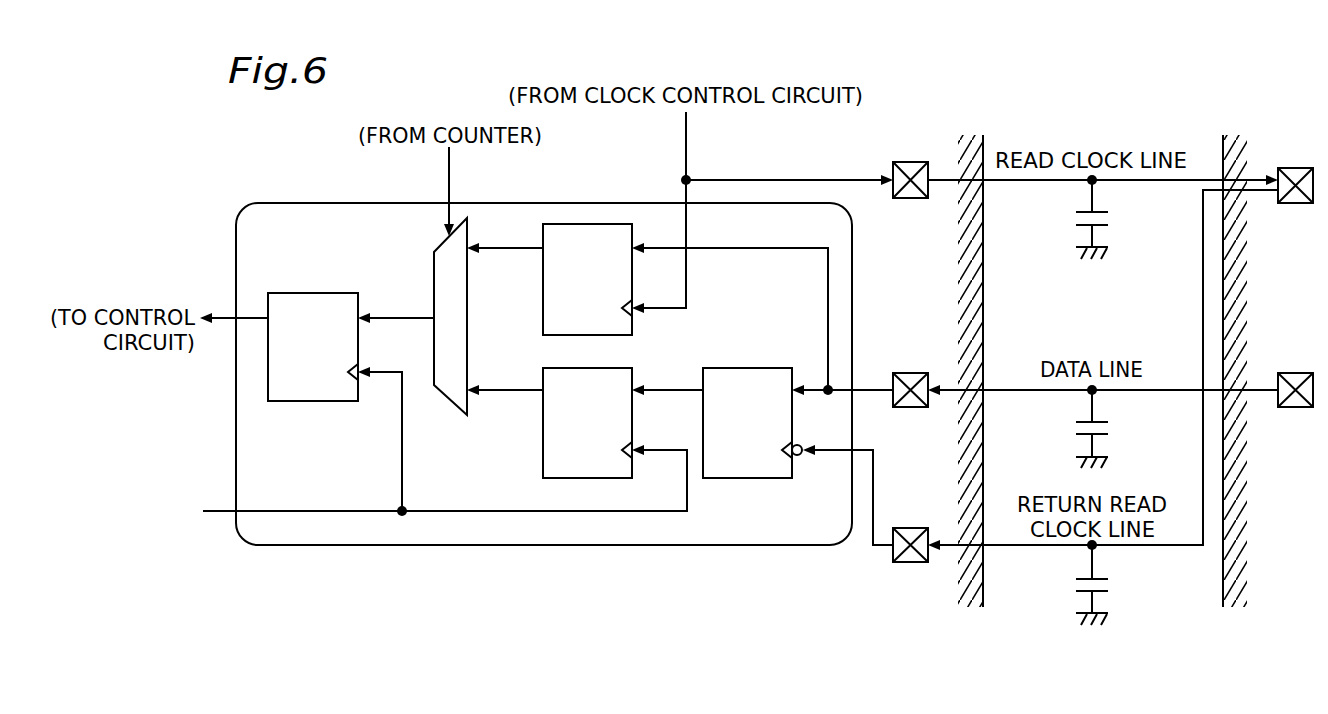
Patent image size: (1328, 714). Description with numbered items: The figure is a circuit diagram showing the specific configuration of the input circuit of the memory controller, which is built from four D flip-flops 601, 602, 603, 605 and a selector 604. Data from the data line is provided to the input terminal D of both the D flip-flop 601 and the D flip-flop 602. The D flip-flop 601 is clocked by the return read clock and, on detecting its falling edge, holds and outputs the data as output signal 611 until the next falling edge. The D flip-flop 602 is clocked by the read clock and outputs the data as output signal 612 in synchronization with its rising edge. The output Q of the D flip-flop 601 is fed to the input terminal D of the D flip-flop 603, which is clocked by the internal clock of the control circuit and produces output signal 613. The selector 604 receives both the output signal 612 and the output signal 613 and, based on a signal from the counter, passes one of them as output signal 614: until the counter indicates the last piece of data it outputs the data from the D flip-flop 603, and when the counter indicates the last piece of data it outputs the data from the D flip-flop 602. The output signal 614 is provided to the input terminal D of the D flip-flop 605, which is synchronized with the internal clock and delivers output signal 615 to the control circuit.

The D flip-flop 601 is at (750, 480).
The D flip-flop 602 is at (578, 224).
The D flip-flop 603 is at (602, 480).
The selector 604 is at (448, 405).
The D flip-flop 605 is at (330, 402).
The output signal of D flip-flop 601 611 is at (675, 386).
The output signal of D flip-flop 602 612 is at (503, 249).
The output signal of D flip-flop 603 613 is at (505, 392).
The output signal of selector 604 614 is at (393, 313).
The output signal of D flip-flop 605 615 is at (253, 320).